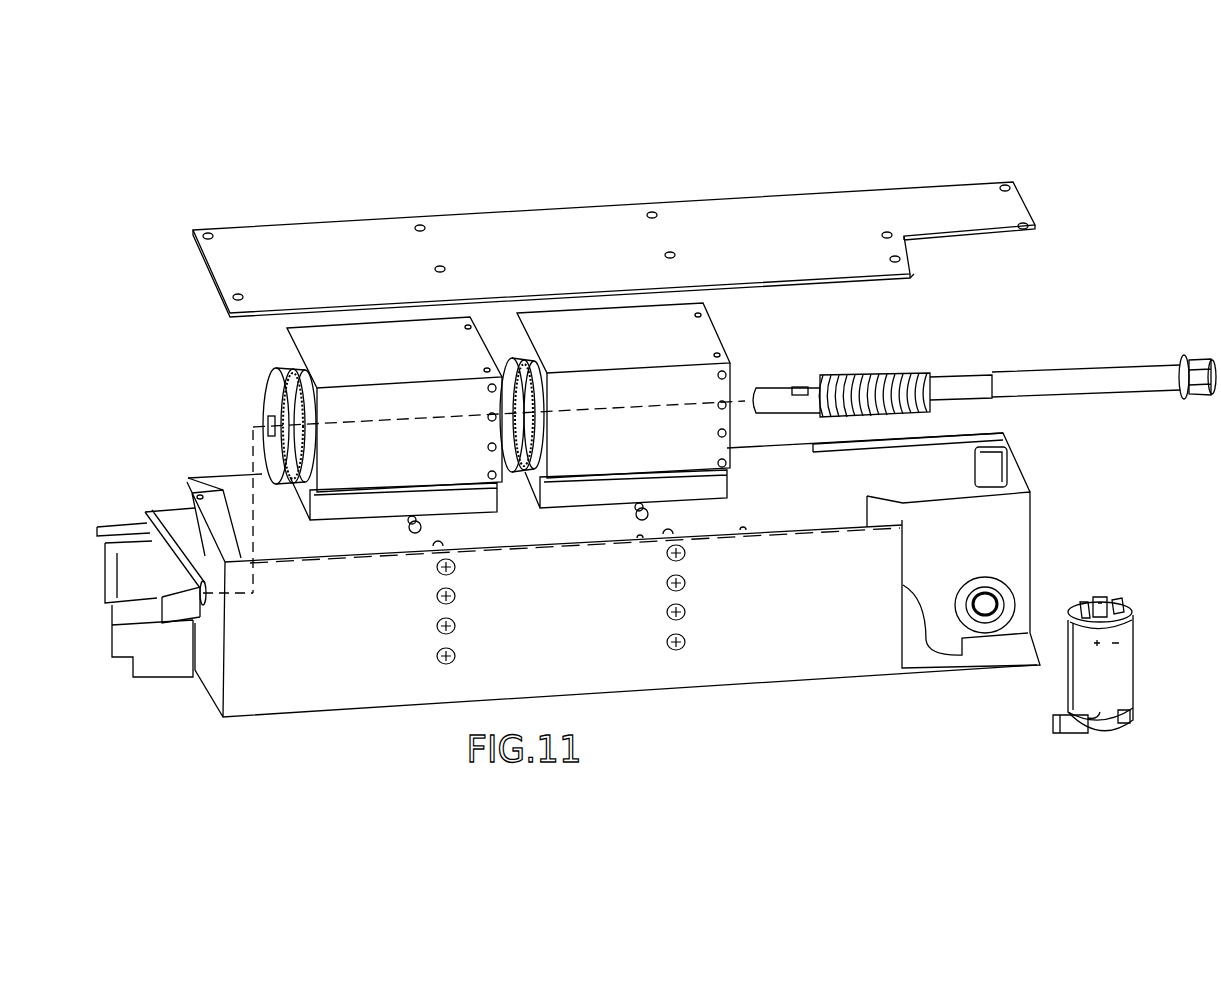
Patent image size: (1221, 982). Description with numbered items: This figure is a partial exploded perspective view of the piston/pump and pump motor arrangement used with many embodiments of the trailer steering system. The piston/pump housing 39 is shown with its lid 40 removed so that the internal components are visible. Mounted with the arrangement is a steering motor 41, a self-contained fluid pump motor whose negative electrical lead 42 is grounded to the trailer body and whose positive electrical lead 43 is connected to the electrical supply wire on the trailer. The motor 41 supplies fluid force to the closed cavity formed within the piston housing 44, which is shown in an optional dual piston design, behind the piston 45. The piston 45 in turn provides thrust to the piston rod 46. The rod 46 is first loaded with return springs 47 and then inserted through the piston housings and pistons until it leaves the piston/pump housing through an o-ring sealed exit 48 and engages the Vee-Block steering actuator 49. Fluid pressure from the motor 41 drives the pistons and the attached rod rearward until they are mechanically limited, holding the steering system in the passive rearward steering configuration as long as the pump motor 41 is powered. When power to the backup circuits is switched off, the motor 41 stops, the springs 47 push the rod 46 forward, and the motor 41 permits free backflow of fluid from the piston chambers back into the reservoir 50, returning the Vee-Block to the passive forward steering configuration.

The piston/pump housing 39 is at (678, 690).
The lid 40 is at (943, 182).
The steering motor 41 is at (1132, 730).
The negative electrical lead 42 is at (1122, 603).
The positive electrical lead 43 is at (1102, 593).
The piston housing 44 is at (427, 316).
The piston 45 is at (508, 353).
The piston rod 46 is at (1137, 363).
The return springs 47 is at (918, 370).
The o-ring sealed exit 48 is at (200, 577).
The Vee-Block steering actuator 49 is at (153, 597).
The reservoir 50 is at (797, 513).